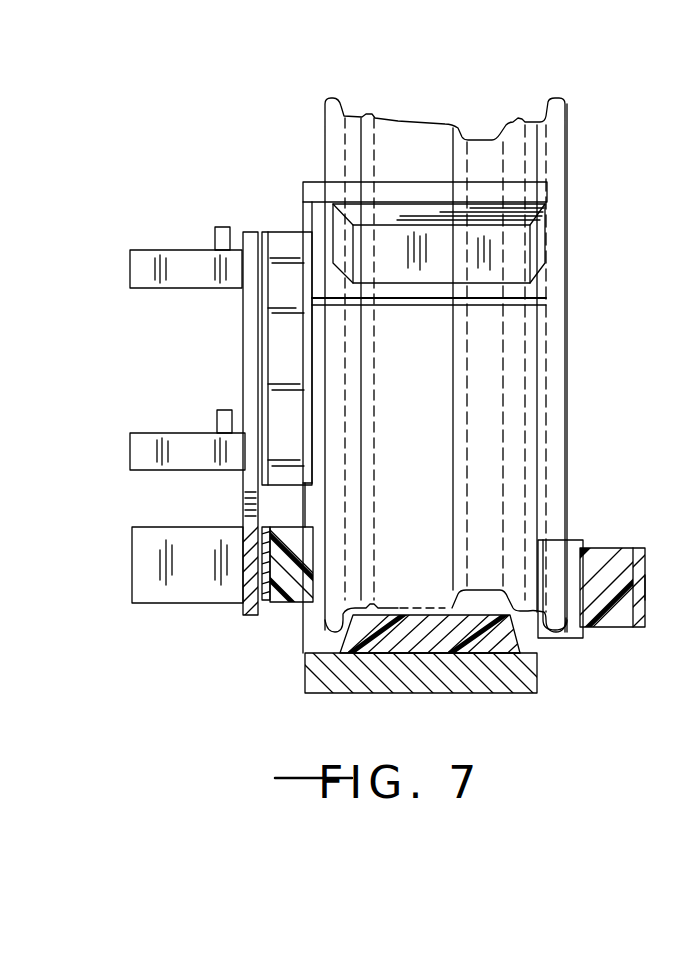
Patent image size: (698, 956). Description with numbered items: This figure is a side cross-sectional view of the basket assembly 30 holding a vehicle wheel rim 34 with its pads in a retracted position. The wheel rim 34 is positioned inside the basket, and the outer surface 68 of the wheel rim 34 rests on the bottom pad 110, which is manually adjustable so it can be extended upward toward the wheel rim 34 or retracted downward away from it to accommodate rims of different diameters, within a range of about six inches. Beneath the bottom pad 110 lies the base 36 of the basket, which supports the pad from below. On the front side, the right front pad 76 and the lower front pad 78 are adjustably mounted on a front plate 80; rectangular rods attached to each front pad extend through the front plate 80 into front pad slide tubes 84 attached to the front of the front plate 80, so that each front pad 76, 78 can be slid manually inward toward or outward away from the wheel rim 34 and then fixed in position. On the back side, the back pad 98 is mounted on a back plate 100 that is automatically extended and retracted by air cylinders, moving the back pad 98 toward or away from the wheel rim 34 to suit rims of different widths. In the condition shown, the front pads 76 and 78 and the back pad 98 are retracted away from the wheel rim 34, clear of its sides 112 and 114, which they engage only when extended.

The basket assembly 30 is at (180, 154).
The wheel rim 34 is at (420, 120).
The base plate 36 is at (308, 688).
The outer surface 68 is at (387, 613).
The right front pad 76 is at (285, 247).
The lower front pad 78 is at (283, 603).
The front plate 80 is at (242, 344).
The front pad slide tubes 84 is at (190, 268).
The back pad 98 is at (603, 560).
The back plate 100 is at (647, 592).
The bottom pad 110 is at (430, 630).
The side 112 is at (328, 479).
The side 114 is at (568, 408).